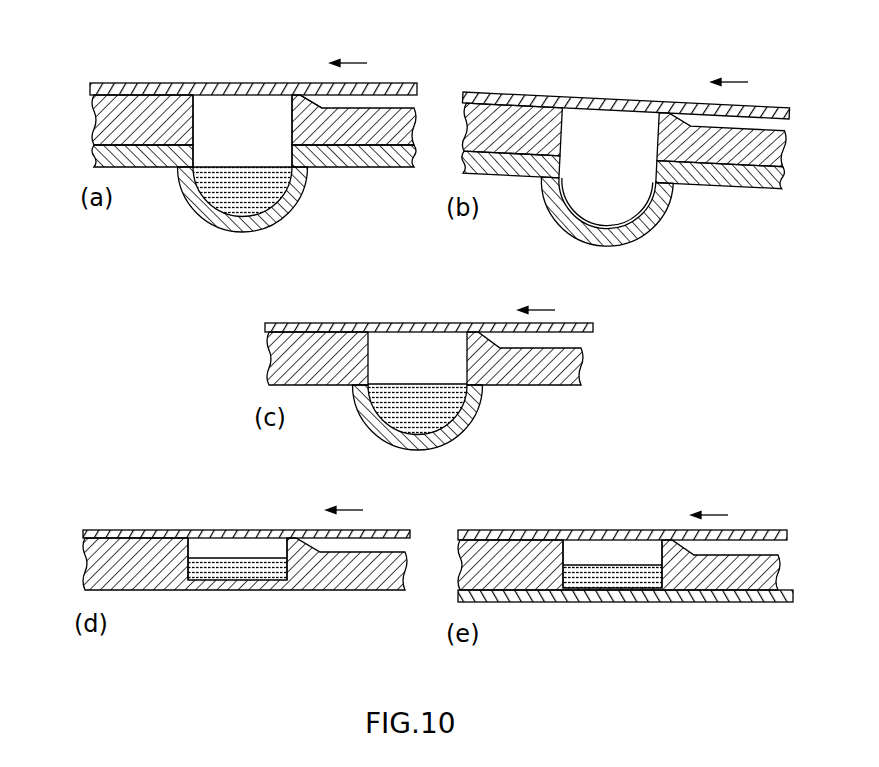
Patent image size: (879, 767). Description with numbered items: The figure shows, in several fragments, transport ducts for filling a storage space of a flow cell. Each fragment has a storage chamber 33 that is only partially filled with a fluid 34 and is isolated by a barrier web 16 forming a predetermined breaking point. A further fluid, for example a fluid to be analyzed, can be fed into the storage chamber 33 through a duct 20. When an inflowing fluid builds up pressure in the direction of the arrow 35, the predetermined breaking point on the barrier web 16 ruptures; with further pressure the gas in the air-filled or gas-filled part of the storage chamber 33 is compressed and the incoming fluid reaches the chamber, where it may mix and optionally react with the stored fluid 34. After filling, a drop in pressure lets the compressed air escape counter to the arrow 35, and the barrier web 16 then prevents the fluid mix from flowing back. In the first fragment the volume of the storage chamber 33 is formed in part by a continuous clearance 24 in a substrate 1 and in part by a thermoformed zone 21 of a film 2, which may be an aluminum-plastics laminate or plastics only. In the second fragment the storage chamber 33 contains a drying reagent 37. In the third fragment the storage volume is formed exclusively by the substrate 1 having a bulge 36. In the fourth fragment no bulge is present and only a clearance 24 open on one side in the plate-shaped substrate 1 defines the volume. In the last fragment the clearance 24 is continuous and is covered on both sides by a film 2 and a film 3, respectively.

The substrate 1 is at (92, 133).
The film 2 is at (327, 168).
The film 3 is at (205, 83).
The barrier web 16 is at (306, 98).
The duct 20 is at (407, 83).
The thermoformed zone 21 is at (200, 218).
The clearance 24 is at (211, 113).
The storage chamber 33 is at (238, 126).
The fluid 34 is at (247, 184).
The arrow 35 is at (358, 63).
The bulge 36 is at (463, 430).
The drying reagent 37 is at (602, 222).